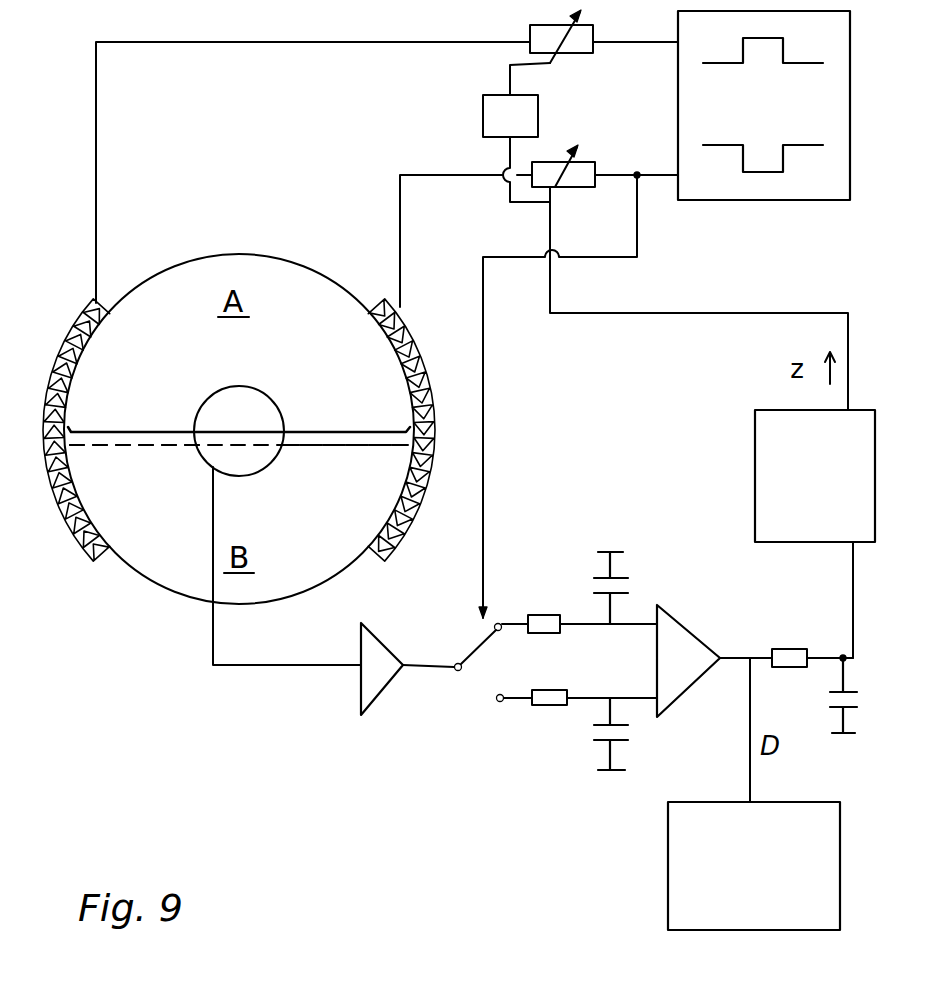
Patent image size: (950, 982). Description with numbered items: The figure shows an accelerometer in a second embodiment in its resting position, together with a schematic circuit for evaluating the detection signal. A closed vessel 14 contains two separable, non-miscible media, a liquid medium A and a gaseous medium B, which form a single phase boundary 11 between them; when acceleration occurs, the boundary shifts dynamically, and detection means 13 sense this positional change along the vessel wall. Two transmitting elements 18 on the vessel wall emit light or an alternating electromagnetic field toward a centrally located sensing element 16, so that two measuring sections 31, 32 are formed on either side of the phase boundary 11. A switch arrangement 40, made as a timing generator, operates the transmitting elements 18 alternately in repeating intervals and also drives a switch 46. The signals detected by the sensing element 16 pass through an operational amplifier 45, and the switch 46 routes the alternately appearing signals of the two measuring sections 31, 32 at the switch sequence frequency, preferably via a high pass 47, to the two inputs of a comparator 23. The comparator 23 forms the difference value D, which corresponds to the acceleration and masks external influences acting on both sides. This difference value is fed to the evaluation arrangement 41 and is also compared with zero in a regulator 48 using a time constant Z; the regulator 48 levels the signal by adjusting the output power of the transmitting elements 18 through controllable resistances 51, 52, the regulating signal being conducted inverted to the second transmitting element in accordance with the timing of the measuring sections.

The phase boundary 11 is at (165, 430).
The detection means 13 is at (221, 392).
The closed vessel 14 is at (334, 283).
The sensing element 16 is at (248, 393).
The transmitting elements 18 is at (85, 312).
The comparator 23 is at (683, 640).
The first measuring section 31 is at (138, 448).
The second measuring section 32 is at (333, 447).
The switch arrangement 40 is at (770, 128).
The evaluation arrangement 41 is at (765, 886).
The operational amplifier 45 is at (377, 685).
The switch 46 is at (467, 653).
The high pass 47 is at (571, 590).
The regulator 48 is at (768, 475).
The controllable resistance 51 is at (578, 47).
The controllable resistance 52 is at (577, 177).